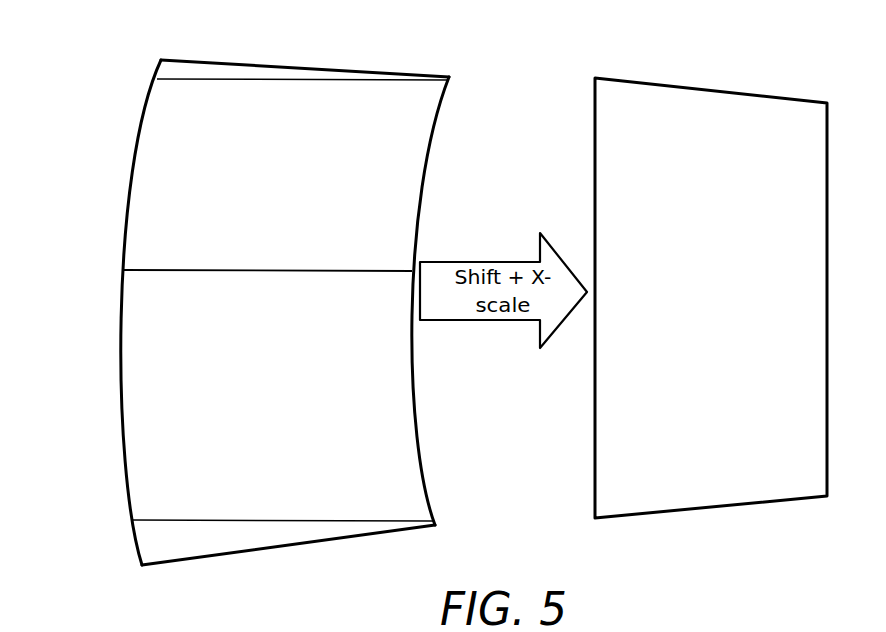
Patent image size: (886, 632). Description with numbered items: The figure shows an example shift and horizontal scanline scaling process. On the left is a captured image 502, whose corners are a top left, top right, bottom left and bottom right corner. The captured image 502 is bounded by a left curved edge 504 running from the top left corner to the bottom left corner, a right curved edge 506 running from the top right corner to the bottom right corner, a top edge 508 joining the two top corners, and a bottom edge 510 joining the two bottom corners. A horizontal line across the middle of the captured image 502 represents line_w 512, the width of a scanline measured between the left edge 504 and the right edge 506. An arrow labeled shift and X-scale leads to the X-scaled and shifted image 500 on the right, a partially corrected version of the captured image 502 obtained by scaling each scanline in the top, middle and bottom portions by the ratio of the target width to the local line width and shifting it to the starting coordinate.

The X-scaled and shifted image 500 is at (701, 334).
The captured image 502 is at (262, 308).
The left curved edge 504 is at (123, 233).
The right curved edge 506 is at (419, 217).
The top edge 508 is at (270, 64).
The bottom edge 510 is at (288, 547).
The line_w 512 is at (268, 313).